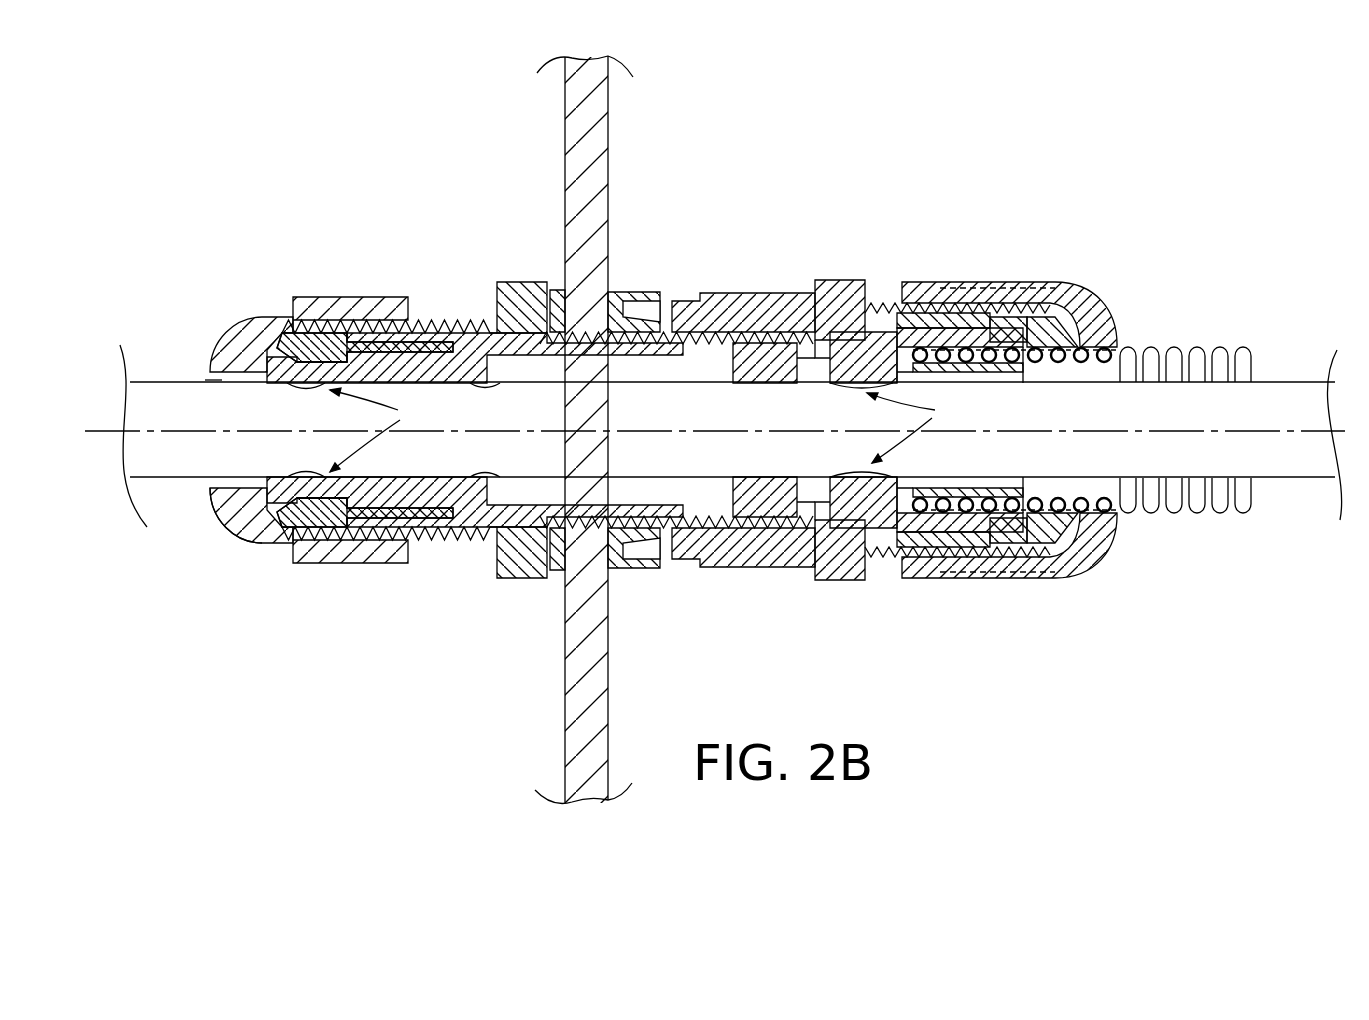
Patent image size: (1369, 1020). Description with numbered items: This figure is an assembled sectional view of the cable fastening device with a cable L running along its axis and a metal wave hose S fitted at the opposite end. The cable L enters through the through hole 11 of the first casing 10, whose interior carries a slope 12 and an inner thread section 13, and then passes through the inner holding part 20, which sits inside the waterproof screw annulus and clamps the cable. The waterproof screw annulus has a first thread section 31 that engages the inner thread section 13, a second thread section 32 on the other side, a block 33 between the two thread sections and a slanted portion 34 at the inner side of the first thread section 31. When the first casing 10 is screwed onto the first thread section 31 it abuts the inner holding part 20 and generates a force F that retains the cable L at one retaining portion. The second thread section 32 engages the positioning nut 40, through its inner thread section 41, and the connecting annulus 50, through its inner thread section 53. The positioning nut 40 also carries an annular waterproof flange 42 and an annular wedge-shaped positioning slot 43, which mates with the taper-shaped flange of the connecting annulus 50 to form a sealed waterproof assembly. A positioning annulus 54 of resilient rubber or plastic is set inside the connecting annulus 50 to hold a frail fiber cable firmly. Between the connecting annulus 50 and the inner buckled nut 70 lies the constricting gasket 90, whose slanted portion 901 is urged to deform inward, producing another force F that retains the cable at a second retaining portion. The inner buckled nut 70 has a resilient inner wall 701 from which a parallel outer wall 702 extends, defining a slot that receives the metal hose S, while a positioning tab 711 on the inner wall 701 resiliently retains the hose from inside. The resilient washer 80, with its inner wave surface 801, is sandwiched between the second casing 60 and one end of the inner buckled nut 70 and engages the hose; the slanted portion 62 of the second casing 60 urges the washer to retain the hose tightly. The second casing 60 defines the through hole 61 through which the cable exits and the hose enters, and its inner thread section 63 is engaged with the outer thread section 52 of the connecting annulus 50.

The first casing 10 is at (228, 315).
The through hole 11 is at (208, 380).
The slope 12 is at (250, 545).
The inner thread section 13 is at (352, 362).
The inner holding part 20 is at (325, 297).
The first thread section 31 is at (455, 318).
The second thread section 32 is at (550, 300).
The block 33 is at (520, 282).
The slanted portion 34 is at (480, 545).
The positioning nut 40 is at (653, 270).
The inner thread section 41 is at (655, 310).
The waterproof flange 42 is at (632, 300).
The positioning slot 43 is at (612, 553).
The connecting annulus 50 is at (760, 273).
The outer thread section 52 is at (888, 300).
The inner thread section 53 is at (732, 300).
The positioning annulus 54 is at (772, 570).
The second casing 60 is at (1075, 570).
The through hole 61 is at (1125, 535).
The slanted portion 62 is at (1135, 318).
The inner thread section 63 is at (1035, 300).
The inner buckled nut 70 is at (1015, 300).
The inner wall 701 is at (920, 300).
The outer wall 702 is at (960, 300).
The positioning tab 711 is at (990, 300).
The resilient washer 80 is at (1080, 300).
The inner wave surface 801 is at (1100, 306).
The constricting gasket 90 is at (858, 300).
The slanted portion 901 is at (824, 310).
The cable L is at (143, 417).
The force F is at (642, 430).
The metal hose S is at (1245, 355).